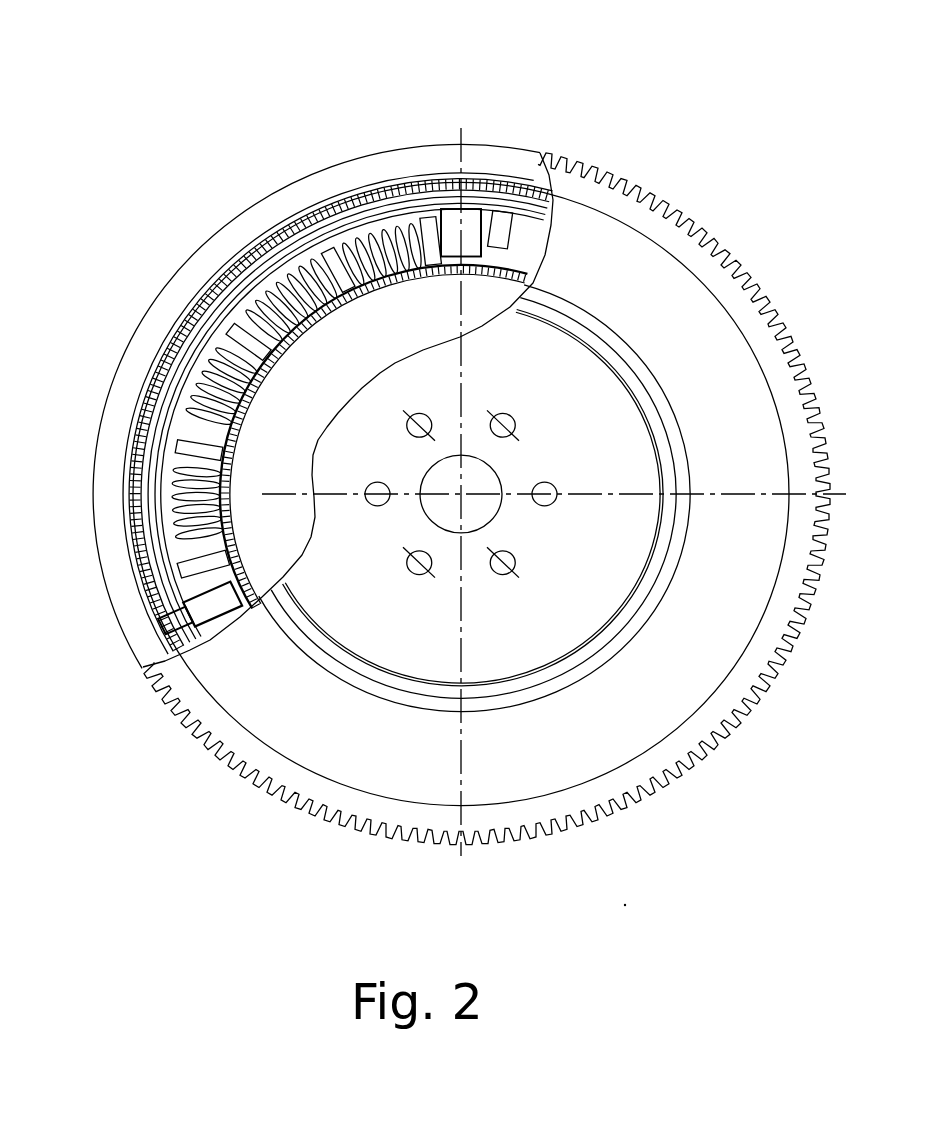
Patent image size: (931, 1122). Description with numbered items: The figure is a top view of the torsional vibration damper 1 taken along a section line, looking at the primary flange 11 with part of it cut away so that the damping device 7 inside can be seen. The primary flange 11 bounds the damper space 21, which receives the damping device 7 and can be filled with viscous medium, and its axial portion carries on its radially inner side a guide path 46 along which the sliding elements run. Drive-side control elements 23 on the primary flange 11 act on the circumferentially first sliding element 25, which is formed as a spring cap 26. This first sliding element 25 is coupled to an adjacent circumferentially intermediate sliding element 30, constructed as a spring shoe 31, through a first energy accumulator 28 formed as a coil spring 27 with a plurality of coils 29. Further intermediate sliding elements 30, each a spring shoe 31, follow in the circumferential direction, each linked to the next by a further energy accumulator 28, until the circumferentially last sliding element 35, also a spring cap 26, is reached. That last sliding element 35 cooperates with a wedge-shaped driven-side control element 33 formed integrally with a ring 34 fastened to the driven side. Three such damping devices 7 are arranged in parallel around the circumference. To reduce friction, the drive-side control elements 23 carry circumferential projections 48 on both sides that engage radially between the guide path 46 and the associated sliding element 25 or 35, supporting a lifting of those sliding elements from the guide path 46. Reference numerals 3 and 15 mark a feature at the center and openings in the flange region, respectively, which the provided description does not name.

The dual mass flywheel 1 is at (722, 238).
The axis of rotation 3 is at (463, 496).
The damping device 7 is at (240, 258).
The primary flange 11 is at (707, 359).
The fastening openings 15 is at (512, 559).
The damper space 21 is at (177, 360).
The drive-side control element 23 is at (490, 217).
The circumferentially first sliding element 25 is at (187, 612).
The spring cap 26 is at (403, 227).
The coil spring 27 is at (183, 472).
The energy accumulator 28 is at (143, 382).
The coils 29 is at (177, 383).
The circumferentially intermediate sliding element 30 is at (260, 230).
The spring shoe 31 is at (303, 233).
The driven-side control element 33 is at (483, 240).
The ring 34 is at (297, 237).
The circumferentially last sliding element 35 is at (400, 200).
The guide path 46 is at (343, 240).
The circumferential projections 48 is at (447, 220).